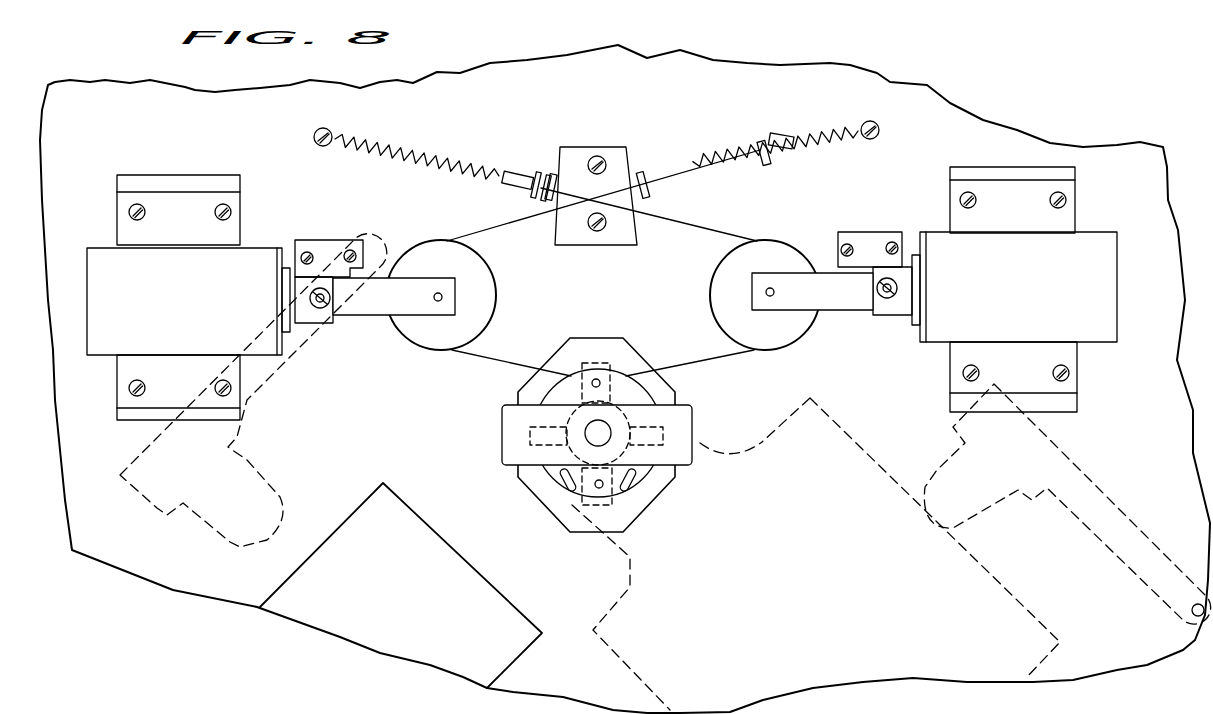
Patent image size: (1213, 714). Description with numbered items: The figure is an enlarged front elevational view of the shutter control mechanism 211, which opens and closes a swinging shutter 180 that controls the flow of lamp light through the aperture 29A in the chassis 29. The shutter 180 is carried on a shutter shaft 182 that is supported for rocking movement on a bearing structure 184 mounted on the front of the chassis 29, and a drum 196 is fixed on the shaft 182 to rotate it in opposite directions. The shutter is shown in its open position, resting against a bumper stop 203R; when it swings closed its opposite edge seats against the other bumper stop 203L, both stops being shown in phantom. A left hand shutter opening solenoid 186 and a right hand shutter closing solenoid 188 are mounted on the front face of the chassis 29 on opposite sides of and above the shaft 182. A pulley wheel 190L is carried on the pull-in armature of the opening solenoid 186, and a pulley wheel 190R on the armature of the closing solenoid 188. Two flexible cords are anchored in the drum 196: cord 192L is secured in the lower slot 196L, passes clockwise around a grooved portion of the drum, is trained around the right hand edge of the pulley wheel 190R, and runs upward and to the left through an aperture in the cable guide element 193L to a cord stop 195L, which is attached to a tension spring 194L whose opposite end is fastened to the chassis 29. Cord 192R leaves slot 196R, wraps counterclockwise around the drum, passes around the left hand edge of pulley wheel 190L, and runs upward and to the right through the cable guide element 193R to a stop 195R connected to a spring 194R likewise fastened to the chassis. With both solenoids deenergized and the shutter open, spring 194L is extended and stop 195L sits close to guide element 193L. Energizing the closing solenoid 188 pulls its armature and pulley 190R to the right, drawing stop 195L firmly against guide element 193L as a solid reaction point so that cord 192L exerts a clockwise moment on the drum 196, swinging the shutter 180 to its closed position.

The chassis 29 is at (443, 461).
The aperture 29A is at (356, 512).
The swinging shutter 180 is at (805, 618).
The shutter shaft 182 is at (612, 430).
The bearing structure 184 is at (576, 438).
The shutter opening solenoid 186 is at (190, 311).
The shutter closing solenoid 188 is at (1027, 300).
The pulley wheel 190L is at (488, 298).
The pulley wheel 190R is at (715, 296).
The flexible cord 192L is at (700, 228).
The flexible cord 192R is at (492, 228).
The cable guide element 193L is at (556, 150).
The cable guide element 193R is at (642, 146).
The tension spring 194L is at (380, 138).
The tension spring 194R is at (845, 128).
The cord stop 195L is at (528, 168).
The cord stop 195R is at (772, 146).
The drum 196 is at (548, 384).
The slot 196L is at (570, 492).
The slot 196R is at (620, 493).
The bumper stop 203L is at (273, 537).
The bumper stop 203R is at (927, 510).
The shutter control mechanism 211 is at (352, 414).